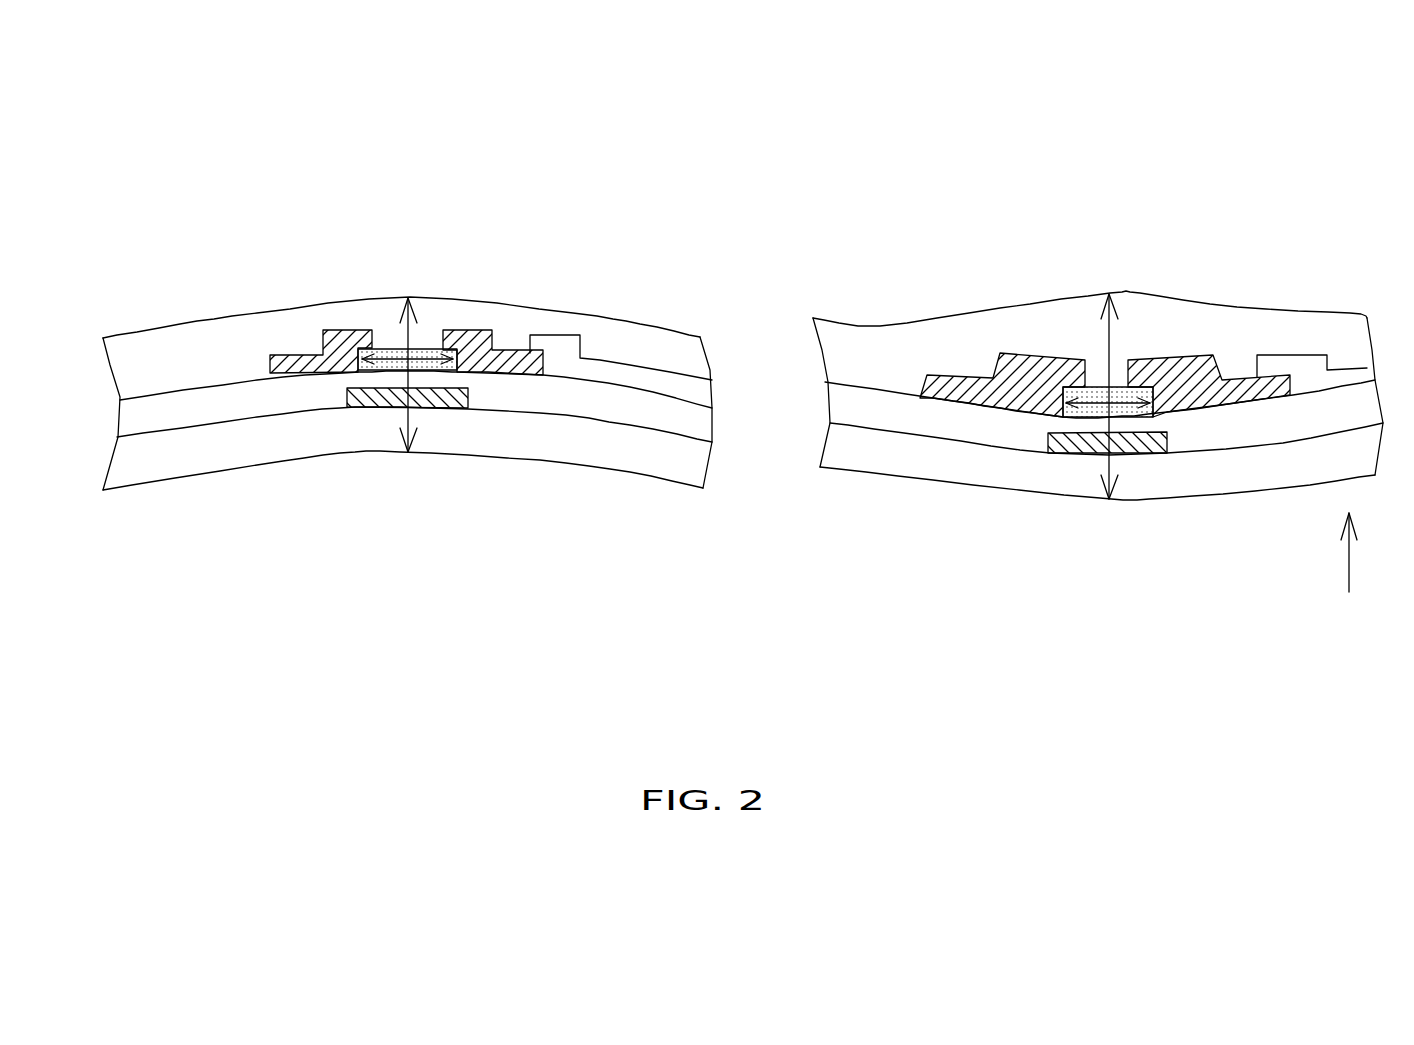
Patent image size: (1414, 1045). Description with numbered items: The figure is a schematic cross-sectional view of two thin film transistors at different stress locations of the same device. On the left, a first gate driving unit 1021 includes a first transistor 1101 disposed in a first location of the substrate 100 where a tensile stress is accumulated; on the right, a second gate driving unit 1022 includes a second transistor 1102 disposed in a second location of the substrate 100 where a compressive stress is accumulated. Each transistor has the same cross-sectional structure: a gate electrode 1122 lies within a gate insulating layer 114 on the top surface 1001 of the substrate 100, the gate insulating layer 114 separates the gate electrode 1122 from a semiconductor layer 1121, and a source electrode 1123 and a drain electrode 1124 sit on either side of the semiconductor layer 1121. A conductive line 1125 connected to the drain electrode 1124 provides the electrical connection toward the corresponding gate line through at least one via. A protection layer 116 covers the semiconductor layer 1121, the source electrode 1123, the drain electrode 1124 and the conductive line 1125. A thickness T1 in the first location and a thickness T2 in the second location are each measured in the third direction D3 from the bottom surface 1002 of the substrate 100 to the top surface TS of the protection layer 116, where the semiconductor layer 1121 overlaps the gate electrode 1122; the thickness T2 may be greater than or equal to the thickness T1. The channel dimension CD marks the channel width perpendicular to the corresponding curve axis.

The first gate driving unit 1021 is at (437, 136).
The second gate driving unit 1022 is at (1116, 105).
The first transistor 1101 is at (267, 243).
The second transistor 1102 is at (943, 291).
The semiconductor layer 1121 is at (747, 332).
The gate electrode 1122 is at (751, 495).
The source electrode 1123 is at (677, 312).
The drain electrode 1124 is at (866, 315).
The conductive line 1125 is at (946, 300).
The protection layer 116 is at (212, 367).
The gate insulating layer 114 is at (706, 403).
The substrate 100 is at (223, 463).
The top surface 1001 is at (434, 451).
The bottom surface 1002 is at (896, 583).
The top surface TS is at (932, 238).
The channel dimension CD is at (778, 373).
The thickness T1 is at (443, 469).
The thickness T2 is at (1138, 514).
The third direction D3 is at (1369, 552).